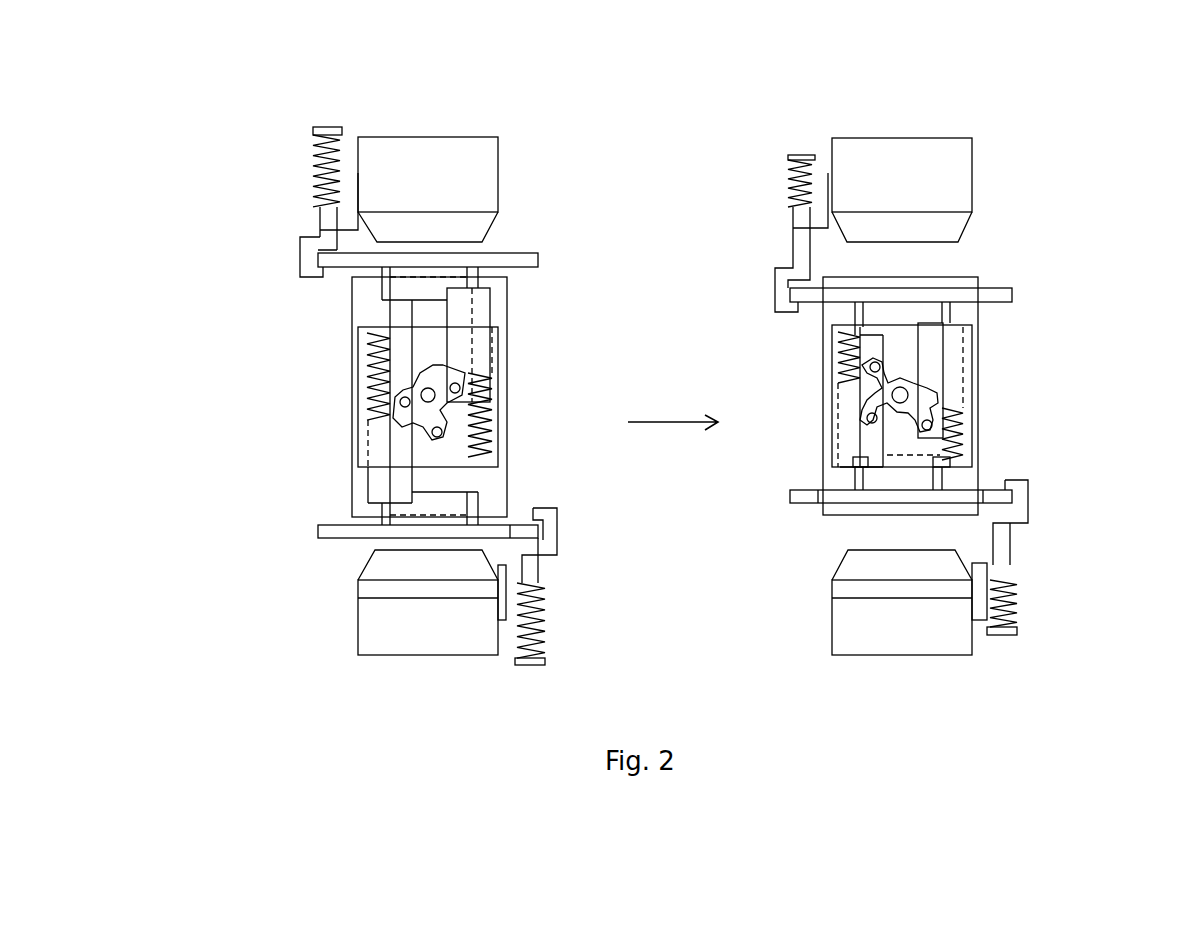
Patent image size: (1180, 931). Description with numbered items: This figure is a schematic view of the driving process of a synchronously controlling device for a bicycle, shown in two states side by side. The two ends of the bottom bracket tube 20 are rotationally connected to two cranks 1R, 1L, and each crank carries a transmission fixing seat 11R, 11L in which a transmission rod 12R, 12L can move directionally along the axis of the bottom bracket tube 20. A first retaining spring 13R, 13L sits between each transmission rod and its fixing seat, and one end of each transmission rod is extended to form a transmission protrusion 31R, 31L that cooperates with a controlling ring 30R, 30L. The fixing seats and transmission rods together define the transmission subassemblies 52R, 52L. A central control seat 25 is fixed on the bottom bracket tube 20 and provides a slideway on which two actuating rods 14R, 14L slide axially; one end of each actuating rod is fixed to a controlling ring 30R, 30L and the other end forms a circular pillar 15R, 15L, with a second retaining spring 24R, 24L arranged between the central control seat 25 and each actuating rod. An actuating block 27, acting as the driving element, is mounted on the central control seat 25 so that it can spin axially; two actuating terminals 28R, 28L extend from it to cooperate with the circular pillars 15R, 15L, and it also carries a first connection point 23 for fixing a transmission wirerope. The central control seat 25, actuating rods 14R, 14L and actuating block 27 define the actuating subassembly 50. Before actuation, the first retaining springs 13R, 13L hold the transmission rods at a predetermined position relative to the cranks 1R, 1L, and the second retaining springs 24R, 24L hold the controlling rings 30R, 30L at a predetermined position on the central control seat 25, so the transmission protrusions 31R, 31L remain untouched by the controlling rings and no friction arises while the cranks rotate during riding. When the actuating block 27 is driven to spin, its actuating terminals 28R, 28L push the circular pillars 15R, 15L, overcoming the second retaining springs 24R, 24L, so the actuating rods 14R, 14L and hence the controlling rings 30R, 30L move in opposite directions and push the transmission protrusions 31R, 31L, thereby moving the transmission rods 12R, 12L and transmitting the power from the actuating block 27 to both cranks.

The crank 1R is at (442, 167).
The crank 1L is at (395, 615).
The transmission rod 12R is at (323, 125).
The transmission rod 12L is at (532, 570).
The transmission protrusion 31R is at (305, 280).
The transmission protrusion 31L is at (540, 513).
The controlling ring 30R is at (457, 260).
The controlling ring 30L is at (362, 530).
The bottom bracket tube 20 is at (362, 302).
The actuating rod 14R is at (472, 320).
The actuating rod 14L is at (380, 482).
The second retaining spring 24R is at (467, 397).
The second retaining spring 24L is at (368, 382).
The first retaining spring 13R is at (793, 180).
The first retaining spring 13L is at (1002, 626).
The transmission fixing seat 11R is at (818, 197).
The transmission fixing seat 11L is at (980, 568).
The central control seat 25 is at (890, 338).
The actuating block 27 is at (903, 395).
The first connection point 23 is at (872, 417).
The actuating terminal 28R is at (875, 375).
The actuating terminal 28L is at (932, 408).
The circular pillar 15R is at (873, 365).
The circular pillar 15L is at (927, 425).
The transmission subassembly 52R is at (1010, 127).
The transmission subassembly 52L is at (777, 616).
The actuating subassembly 50 is at (1034, 256).